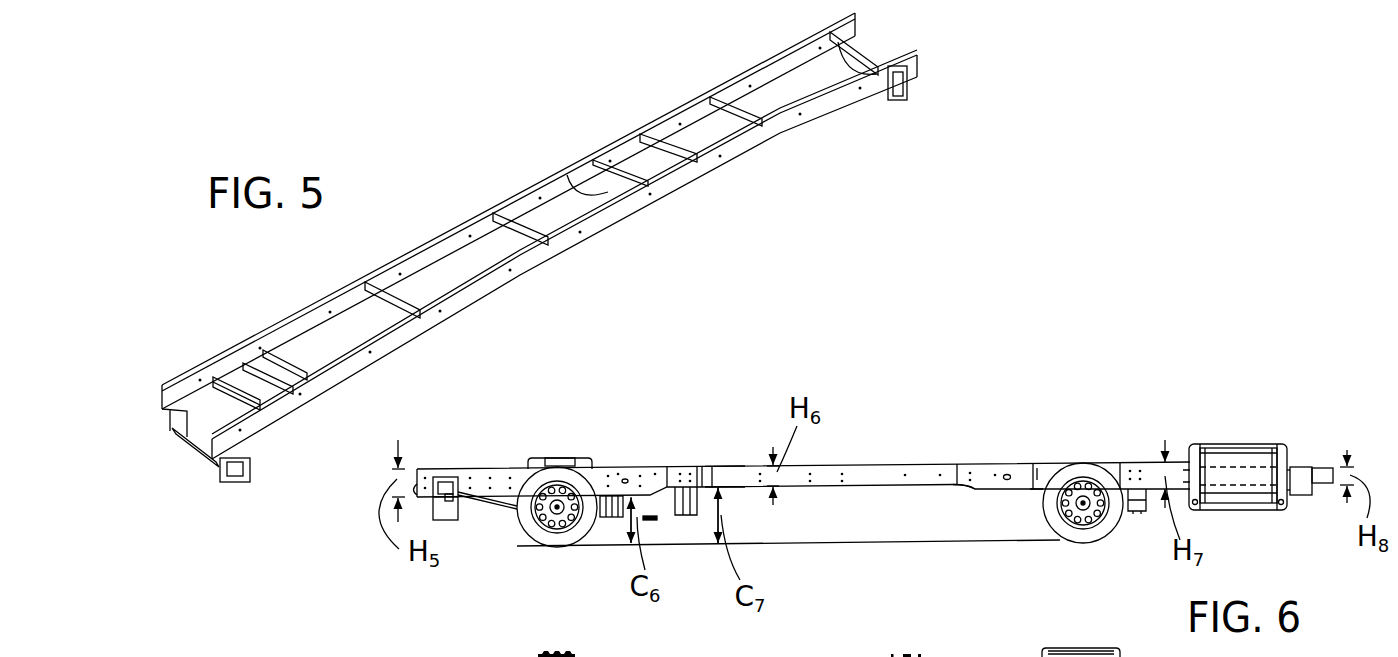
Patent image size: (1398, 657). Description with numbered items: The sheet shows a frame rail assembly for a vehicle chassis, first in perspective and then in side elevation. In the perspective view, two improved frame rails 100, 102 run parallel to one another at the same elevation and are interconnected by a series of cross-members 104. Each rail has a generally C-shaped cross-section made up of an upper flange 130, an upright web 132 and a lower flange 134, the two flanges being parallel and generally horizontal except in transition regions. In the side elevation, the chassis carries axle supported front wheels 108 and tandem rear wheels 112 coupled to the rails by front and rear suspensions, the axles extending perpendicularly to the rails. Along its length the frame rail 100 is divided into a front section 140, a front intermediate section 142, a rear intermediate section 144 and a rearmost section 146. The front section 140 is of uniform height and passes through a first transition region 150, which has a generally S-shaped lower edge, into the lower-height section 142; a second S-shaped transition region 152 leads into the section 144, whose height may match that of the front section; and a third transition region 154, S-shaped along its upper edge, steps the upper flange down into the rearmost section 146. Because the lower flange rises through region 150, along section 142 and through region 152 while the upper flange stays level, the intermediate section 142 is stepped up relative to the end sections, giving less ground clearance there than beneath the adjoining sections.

In FIG. 5, the frame rail 100 is at (487, 308).
In FIG. 6, the frame rail 100 is at (903, 462).
In FIG. 5, the frame rail 102 is at (424, 242).
In FIG. 5, the cross-members 104 is at (522, 224).
In FIG. 6, the front wheels 108 is at (558, 554).
In FIG. 6, the tandem wheels 112 is at (1076, 550).
In FIG. 5, the upper flange 130 is at (330, 365).
In FIG. 6, the upper flange 130 is at (724, 466).
In FIG. 5, the upright web 132 is at (328, 416).
In FIG. 6, the upright web 132 is at (728, 480).
In FIG. 5, the lower flange 134 is at (291, 414).
In FIG. 6, the lower flange 134 is at (729, 490).
In FIG. 6, the front section 140 is at (487, 468).
In FIG. 6, the front intermediate section 142 is at (864, 465).
In FIG. 6, the rear intermediate section 144 is at (1118, 461).
In FIG. 6, the rearmost section 146 is at (1323, 470).
In FIG. 6, the transition region 150 is at (659, 492).
In FIG. 6, the transition region 152 is at (962, 489).
In FIG. 6, the transition region 154 is at (1213, 465).